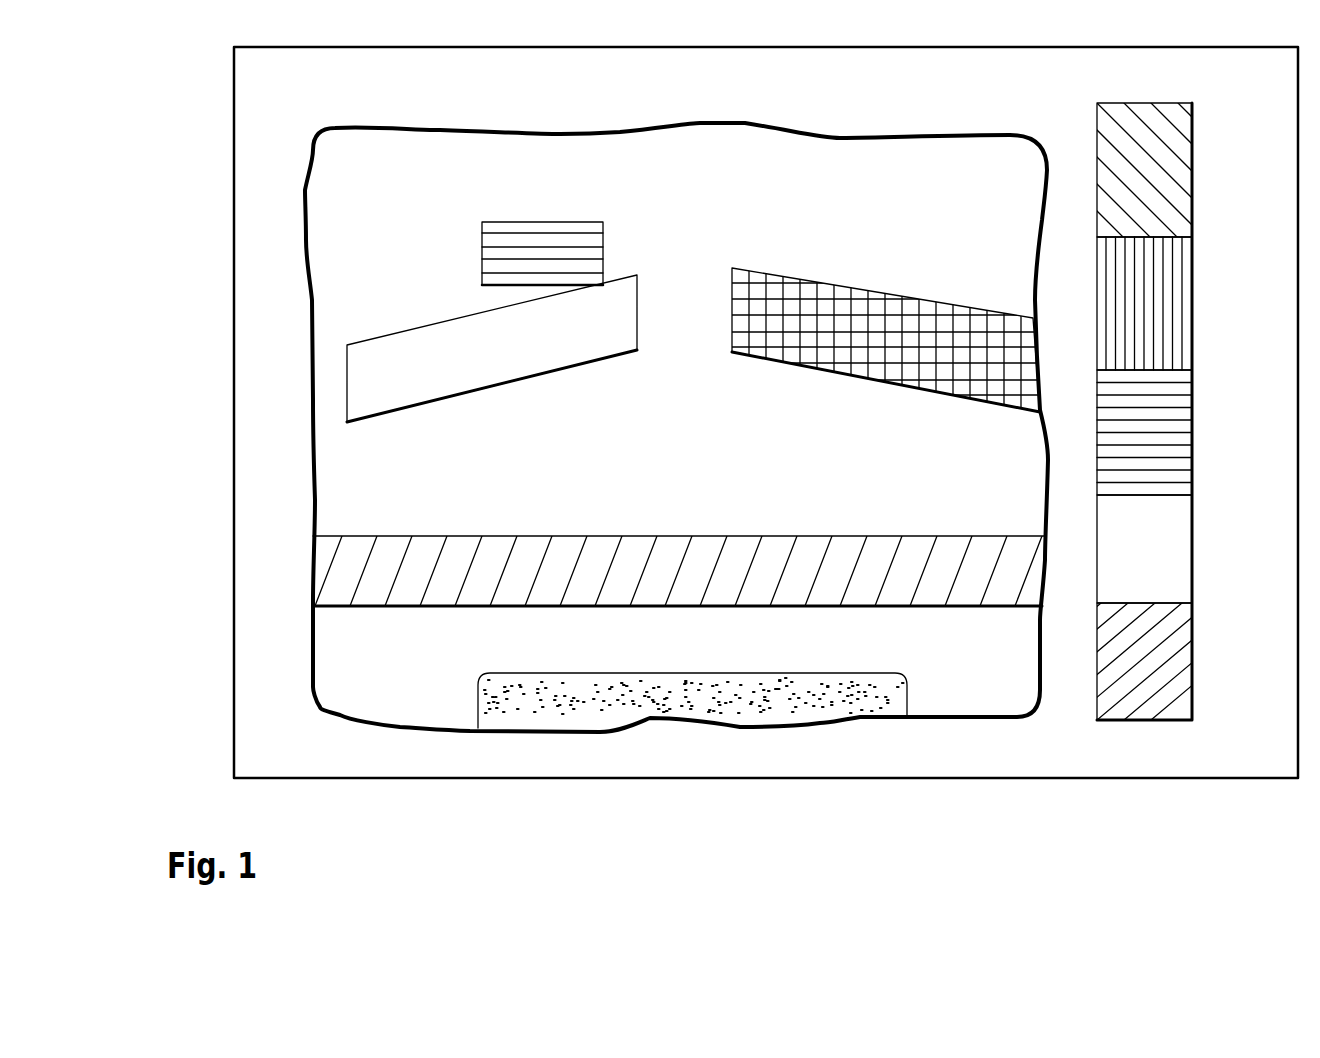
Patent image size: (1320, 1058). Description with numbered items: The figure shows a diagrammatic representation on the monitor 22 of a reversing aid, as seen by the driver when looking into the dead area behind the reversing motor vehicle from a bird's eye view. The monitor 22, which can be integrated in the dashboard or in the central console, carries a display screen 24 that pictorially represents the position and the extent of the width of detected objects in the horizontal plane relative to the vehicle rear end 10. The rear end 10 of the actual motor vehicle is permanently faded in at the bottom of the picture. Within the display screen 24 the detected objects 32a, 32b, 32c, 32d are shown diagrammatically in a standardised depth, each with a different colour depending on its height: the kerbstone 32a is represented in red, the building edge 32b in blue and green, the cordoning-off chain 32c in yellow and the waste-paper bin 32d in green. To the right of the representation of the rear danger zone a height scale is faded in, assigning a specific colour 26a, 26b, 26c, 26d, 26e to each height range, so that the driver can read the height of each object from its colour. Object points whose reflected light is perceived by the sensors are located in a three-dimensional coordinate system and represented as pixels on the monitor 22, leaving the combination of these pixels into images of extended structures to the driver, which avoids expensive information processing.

The rear end region 10 is at (905, 683).
The display device 22 is at (233, 240).
The display screen 24 is at (455, 130).
The colour of the height scale 26a is at (1177, 662).
The colour of the height scale 26b is at (1175, 555).
The colour of the height scale 26c is at (1177, 442).
The colour of the height scale 26d is at (1172, 317).
The colour of the height scale 26e is at (1177, 160).
The kerbstone 32a is at (692, 548).
The building edge 32b is at (872, 300).
The cordoning-off chain 32c is at (550, 360).
The waste-paper bin 32d is at (583, 233).